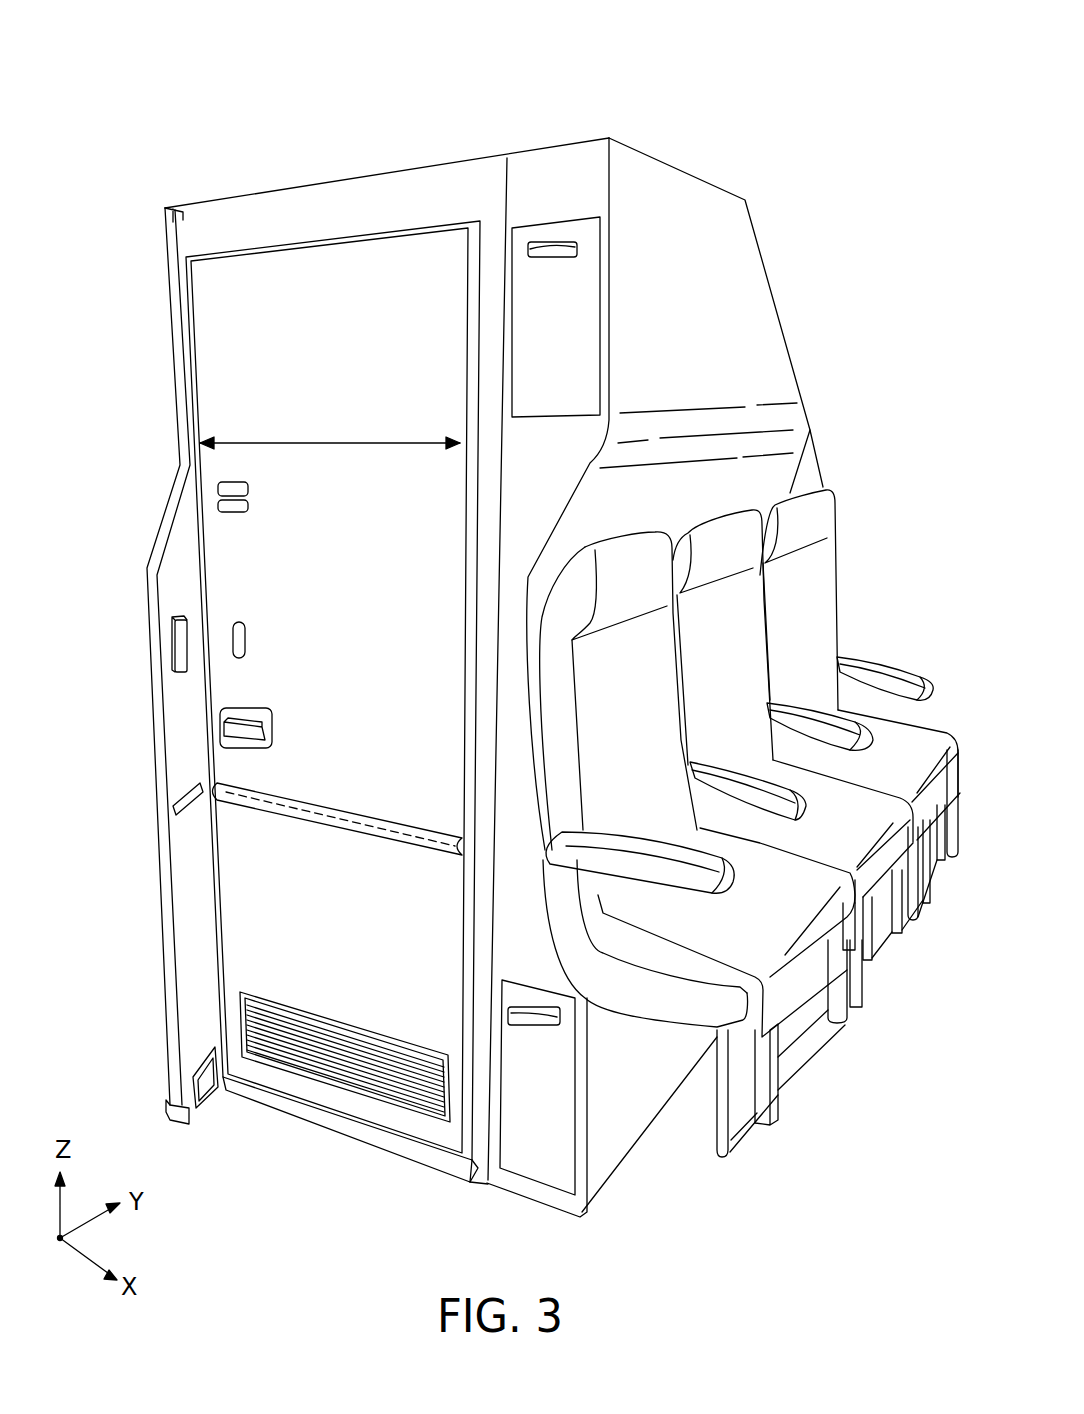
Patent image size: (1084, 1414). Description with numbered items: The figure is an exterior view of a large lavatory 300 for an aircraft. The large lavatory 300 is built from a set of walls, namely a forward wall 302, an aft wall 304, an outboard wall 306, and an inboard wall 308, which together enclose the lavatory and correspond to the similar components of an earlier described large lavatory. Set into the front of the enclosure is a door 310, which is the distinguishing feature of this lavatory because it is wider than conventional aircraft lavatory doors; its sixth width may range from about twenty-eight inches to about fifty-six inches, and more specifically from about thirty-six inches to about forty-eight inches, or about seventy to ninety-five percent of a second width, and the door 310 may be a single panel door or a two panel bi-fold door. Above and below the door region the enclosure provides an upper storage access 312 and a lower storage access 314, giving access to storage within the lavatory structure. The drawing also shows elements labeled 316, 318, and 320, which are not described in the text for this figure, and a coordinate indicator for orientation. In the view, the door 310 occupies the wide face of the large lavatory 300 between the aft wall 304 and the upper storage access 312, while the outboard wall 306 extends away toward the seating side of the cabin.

The large lavatory 300 is at (140, 112).
The forward wall 302 is at (808, 316).
The aft wall 304 is at (172, 318).
The outboard wall 306 is at (757, 234).
The inboard wall 308 is at (382, 189).
The door 310 is at (258, 375).
The upper storage access 312 is at (532, 327).
The lower storage access 314 is at (562, 1118).
The passenger seats 316 is at (837, 630).
The floor base 318 is at (597, 1172).
The curved wall portion 320 is at (766, 352).